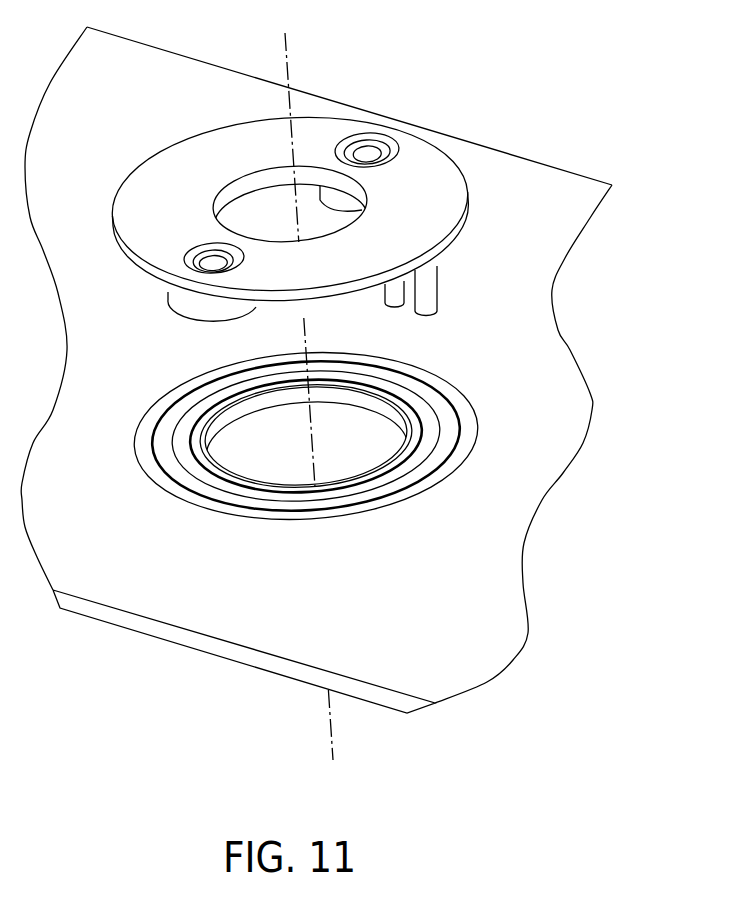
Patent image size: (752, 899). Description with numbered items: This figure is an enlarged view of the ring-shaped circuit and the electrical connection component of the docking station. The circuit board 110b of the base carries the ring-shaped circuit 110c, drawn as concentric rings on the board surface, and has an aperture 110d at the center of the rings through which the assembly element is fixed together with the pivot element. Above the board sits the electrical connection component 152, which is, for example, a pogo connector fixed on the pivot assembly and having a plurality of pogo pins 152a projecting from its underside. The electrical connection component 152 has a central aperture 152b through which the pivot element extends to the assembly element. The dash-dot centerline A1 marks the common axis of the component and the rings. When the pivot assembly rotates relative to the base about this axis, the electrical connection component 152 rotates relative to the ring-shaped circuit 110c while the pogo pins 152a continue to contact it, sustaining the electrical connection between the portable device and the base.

The circuit board 110b is at (551, 185).
The ring-shaped circuit 110c is at (488, 446).
The aperture 110d is at (223, 418).
The electrical connection component 152 is at (417, 158).
The pogo pins 152a is at (428, 292).
The aperture 152b is at (238, 189).
The axis A1 is at (286, 44).